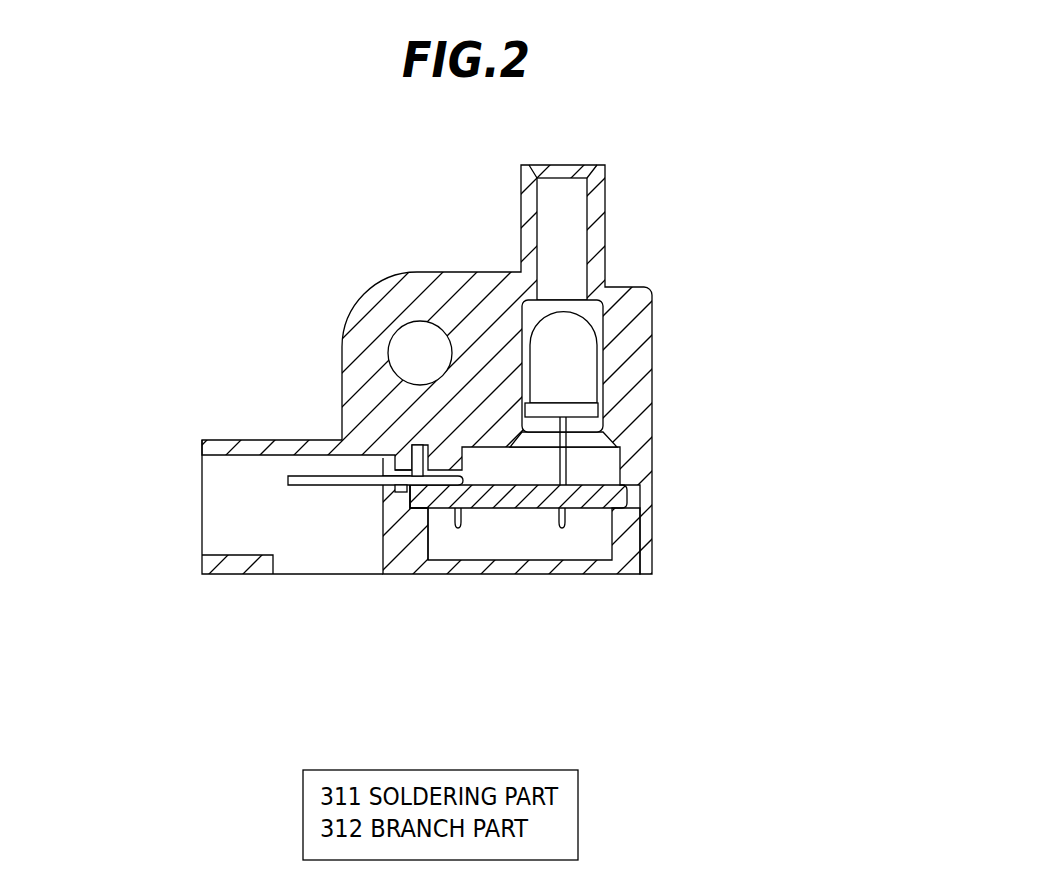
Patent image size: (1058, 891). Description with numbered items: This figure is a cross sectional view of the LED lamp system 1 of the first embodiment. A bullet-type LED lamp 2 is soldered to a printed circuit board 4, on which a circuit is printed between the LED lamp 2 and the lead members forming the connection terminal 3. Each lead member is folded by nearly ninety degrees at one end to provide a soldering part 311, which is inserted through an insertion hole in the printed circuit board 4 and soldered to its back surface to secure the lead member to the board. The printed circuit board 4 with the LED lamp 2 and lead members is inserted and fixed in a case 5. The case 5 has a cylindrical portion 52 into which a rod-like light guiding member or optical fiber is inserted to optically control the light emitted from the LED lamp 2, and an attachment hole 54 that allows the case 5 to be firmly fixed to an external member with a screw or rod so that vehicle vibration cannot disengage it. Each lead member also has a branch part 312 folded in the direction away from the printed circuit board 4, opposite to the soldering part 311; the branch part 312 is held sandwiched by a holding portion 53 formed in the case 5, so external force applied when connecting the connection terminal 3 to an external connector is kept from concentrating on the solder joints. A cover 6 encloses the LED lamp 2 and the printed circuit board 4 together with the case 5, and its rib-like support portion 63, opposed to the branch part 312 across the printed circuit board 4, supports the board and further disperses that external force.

The LED lamp system 1 is at (619, 131).
The LED lamp 2 is at (572, 380).
The connection terminal 3 is at (315, 481).
The printed circuit board 4 is at (598, 491).
The case 5 is at (380, 315).
The cover 6 is at (560, 575).
The cylindrical portion 52 is at (597, 226).
The holding portion 53 is at (442, 453).
The attachment hole 54 is at (407, 357).
The support portion 63 is at (420, 552).
The soldering part 311 is at (458, 522).
The branch part 312 is at (397, 488).